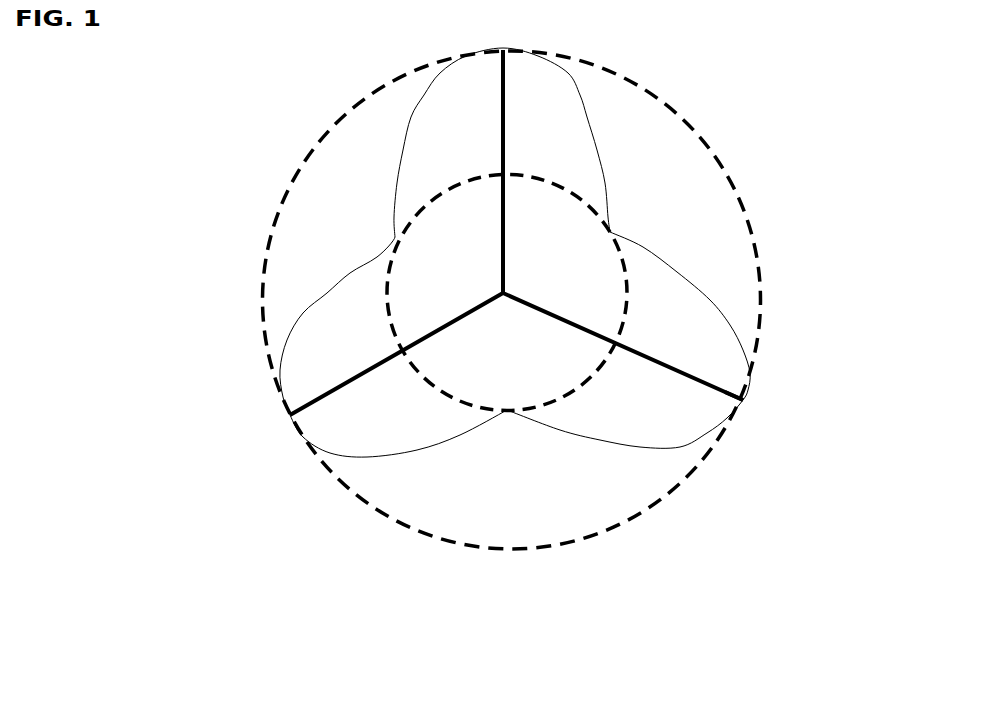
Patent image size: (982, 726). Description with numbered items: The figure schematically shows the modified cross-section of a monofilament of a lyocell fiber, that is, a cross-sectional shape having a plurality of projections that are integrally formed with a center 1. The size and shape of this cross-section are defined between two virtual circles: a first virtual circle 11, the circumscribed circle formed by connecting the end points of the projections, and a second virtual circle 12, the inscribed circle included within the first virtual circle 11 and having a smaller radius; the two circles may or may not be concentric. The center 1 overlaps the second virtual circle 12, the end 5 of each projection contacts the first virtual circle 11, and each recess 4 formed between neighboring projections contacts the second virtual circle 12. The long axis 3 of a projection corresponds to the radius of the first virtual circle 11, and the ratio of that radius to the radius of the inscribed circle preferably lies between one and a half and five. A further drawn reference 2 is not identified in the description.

The center 1 is at (628, 265).
The lobe member 2 is at (606, 183).
The long axis of projection 3 is at (691, 383).
The recess of projection 4 is at (507, 415).
The end of projection 5 is at (745, 405).
The first virtual circle 11 is at (318, 460).
The second virtual circle 12 is at (380, 285).